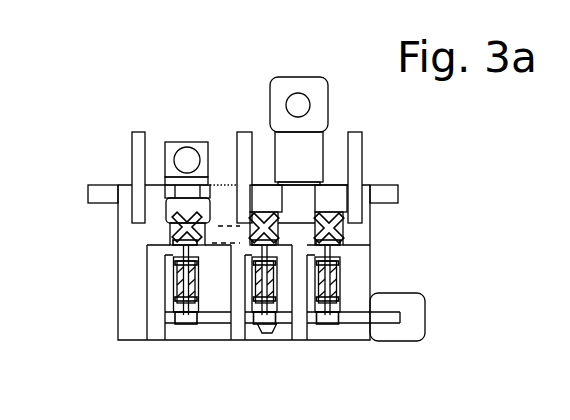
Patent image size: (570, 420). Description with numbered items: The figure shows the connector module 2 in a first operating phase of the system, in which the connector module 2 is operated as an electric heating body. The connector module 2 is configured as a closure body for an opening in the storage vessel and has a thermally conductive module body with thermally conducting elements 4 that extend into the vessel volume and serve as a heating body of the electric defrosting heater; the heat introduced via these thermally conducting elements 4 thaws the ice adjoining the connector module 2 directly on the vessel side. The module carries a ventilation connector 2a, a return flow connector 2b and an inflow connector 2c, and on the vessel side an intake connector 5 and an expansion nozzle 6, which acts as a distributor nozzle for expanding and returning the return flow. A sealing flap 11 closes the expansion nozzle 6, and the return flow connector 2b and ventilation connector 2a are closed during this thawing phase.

The connector module 2 is at (125, 303).
The ventilation connector 2a is at (299, 328).
The return flow connector 2b is at (238, 330).
The inflow connector 2c is at (155, 330).
The thermally conducting elements 4 is at (242, 140).
The intake connector 5 is at (175, 148).
The expansion nozzle 6 is at (302, 103).
The sealing flap 11 is at (313, 155).